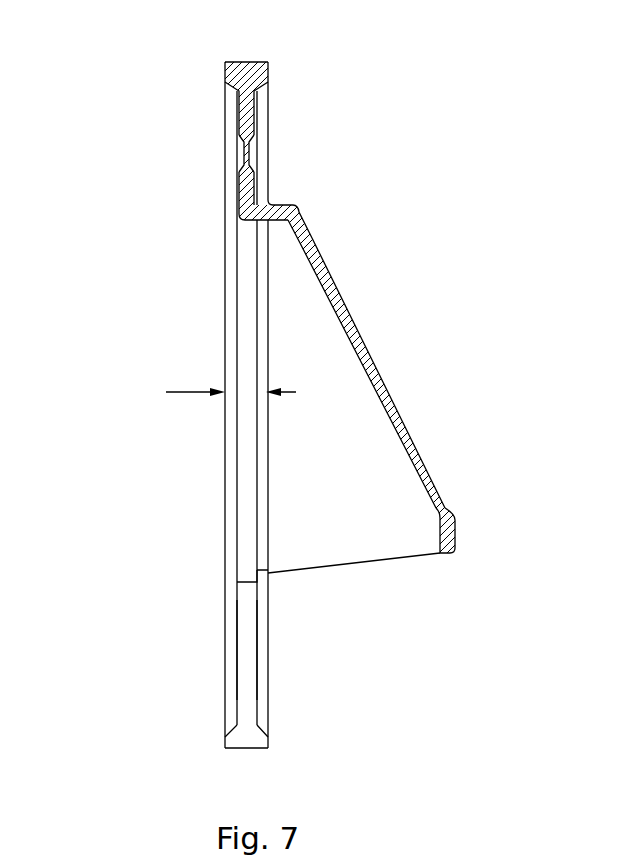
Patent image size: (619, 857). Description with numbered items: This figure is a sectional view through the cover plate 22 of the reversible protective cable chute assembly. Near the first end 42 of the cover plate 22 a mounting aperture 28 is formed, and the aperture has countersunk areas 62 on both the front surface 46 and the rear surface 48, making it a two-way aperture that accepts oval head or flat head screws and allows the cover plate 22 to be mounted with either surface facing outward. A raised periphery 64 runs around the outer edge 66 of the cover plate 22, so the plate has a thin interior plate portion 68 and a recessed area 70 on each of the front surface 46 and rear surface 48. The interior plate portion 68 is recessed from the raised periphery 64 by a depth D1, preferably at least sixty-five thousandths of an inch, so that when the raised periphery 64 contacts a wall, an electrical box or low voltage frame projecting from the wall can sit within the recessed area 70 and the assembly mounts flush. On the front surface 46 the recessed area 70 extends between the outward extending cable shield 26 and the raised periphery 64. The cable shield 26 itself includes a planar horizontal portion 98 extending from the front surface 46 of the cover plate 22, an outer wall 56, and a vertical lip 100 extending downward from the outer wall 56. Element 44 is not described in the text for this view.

The cover plate 22 is at (105, 294).
The first end 42 is at (247, 62).
The interior plate portion 68 is at (240, 100).
The recessed area 70 is at (233, 115).
The raised periphery 64 is at (270, 72).
The outer edge 66 is at (268, 62).
The bottom wall 44 is at (243, 749).
The rear surface 48 is at (222, 655).
The front surface 46 is at (271, 647).
The recessed depth D1 is at (216, 392).
The cable shield 26 is at (375, 360).
The countersunk areas 62 is at (243, 148).
The mounting aperture 28 is at (249, 160).
The planar horizontal portion 98 is at (285, 206).
The outer wall 56 is at (405, 420).
The vertical lip 100 is at (445, 535).